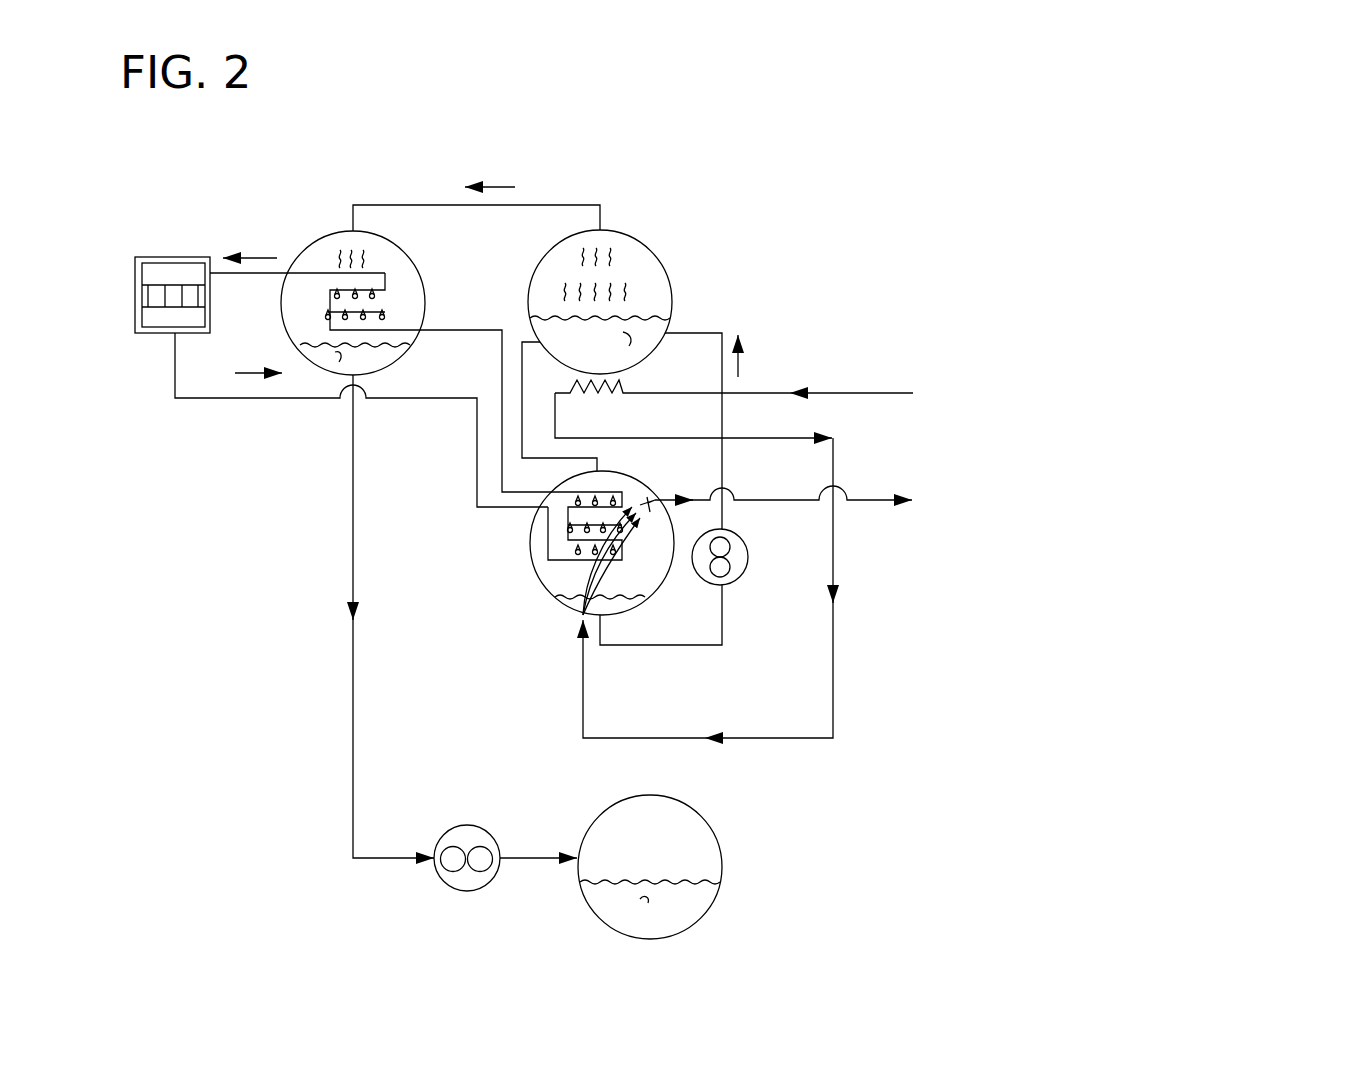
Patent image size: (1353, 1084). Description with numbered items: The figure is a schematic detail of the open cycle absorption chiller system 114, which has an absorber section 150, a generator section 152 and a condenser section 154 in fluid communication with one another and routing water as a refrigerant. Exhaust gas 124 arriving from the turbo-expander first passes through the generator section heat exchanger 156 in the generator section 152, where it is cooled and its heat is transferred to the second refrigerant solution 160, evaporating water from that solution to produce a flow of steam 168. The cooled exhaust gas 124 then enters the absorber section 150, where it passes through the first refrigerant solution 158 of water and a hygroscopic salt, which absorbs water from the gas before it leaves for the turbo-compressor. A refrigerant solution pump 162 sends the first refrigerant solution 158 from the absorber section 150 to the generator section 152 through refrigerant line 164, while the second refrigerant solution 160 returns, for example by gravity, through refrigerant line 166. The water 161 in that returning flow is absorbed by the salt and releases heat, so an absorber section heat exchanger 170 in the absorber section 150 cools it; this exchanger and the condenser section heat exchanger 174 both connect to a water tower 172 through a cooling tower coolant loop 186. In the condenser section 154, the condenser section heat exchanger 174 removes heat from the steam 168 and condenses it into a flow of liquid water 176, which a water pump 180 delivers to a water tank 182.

The open cycle absorption chiller system 114 is at (512, 122).
The exhaust gas 124 is at (825, 393).
The absorber section 150 is at (533, 568).
The generator section 152 is at (637, 235).
The condenser section 154 is at (318, 235).
The generator section heat exchanger 156 is at (595, 390).
The first refrigerant solution 158 is at (568, 607).
The second refrigerant solution 160 is at (623, 332).
The water 161 is at (575, 547).
The refrigerant solution pump 162 is at (748, 552).
The refrigerant line 164 is at (693, 333).
The refrigerant line 166 is at (522, 375).
The flow of steam 168 is at (363, 262).
The absorber section heat exchanger 170 is at (570, 512).
The water tower 172 is at (135, 293).
The condenser section heat exchanger 174 is at (330, 292).
The flow of liquid water 176 is at (337, 362).
The water pump 180 is at (463, 892).
The water tank 182 is at (710, 823).
The cooling tower coolant loop 186 is at (223, 270).